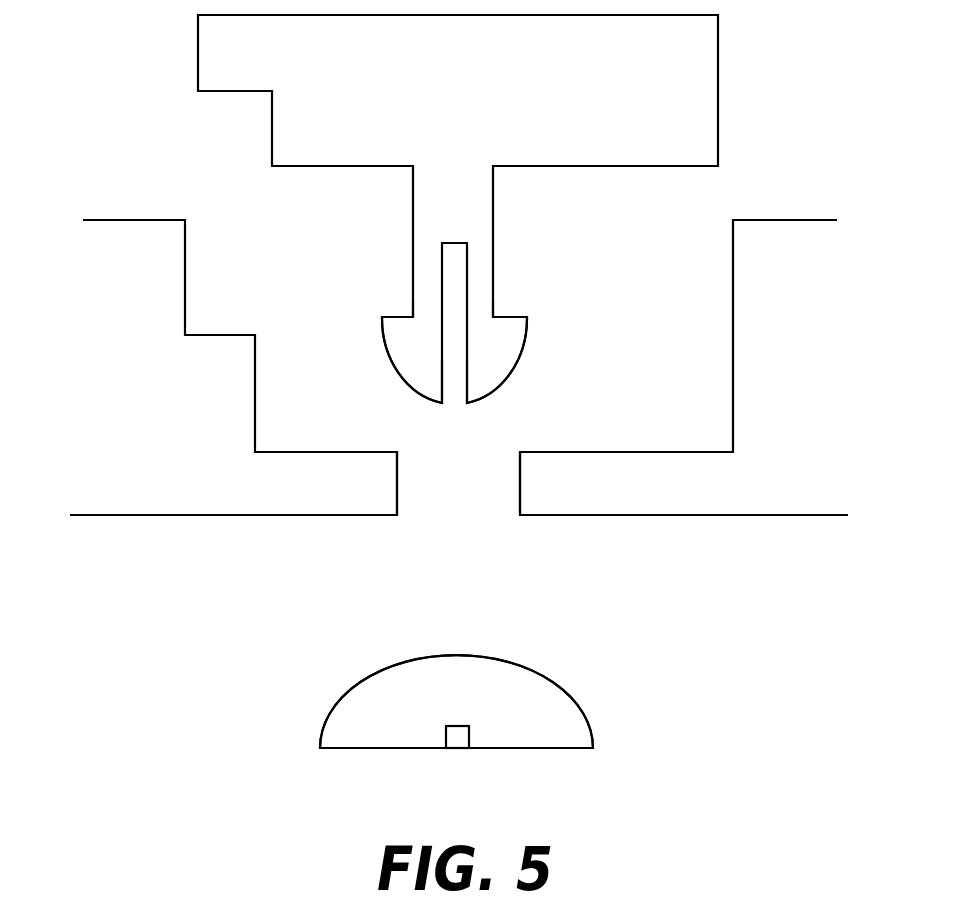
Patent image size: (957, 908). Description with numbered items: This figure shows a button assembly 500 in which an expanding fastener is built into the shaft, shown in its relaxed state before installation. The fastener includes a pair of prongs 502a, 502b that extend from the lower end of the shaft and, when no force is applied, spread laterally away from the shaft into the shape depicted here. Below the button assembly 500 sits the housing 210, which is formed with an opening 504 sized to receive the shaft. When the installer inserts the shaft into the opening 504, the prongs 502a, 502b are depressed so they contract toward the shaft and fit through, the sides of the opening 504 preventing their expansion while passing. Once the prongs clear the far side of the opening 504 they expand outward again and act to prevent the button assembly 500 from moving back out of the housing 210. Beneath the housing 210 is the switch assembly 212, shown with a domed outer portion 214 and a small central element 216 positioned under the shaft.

The button assembly 500 is at (458, 209).
The prong 502a is at (381, 356).
The prong 502b is at (544, 359).
The opening 504 is at (493, 508).
The housing 210 is at (459, 367).
The switch assembly 212 is at (540, 713).
The outer surface of bump 214 is at (353, 668).
The central pad / core 216 is at (482, 758).